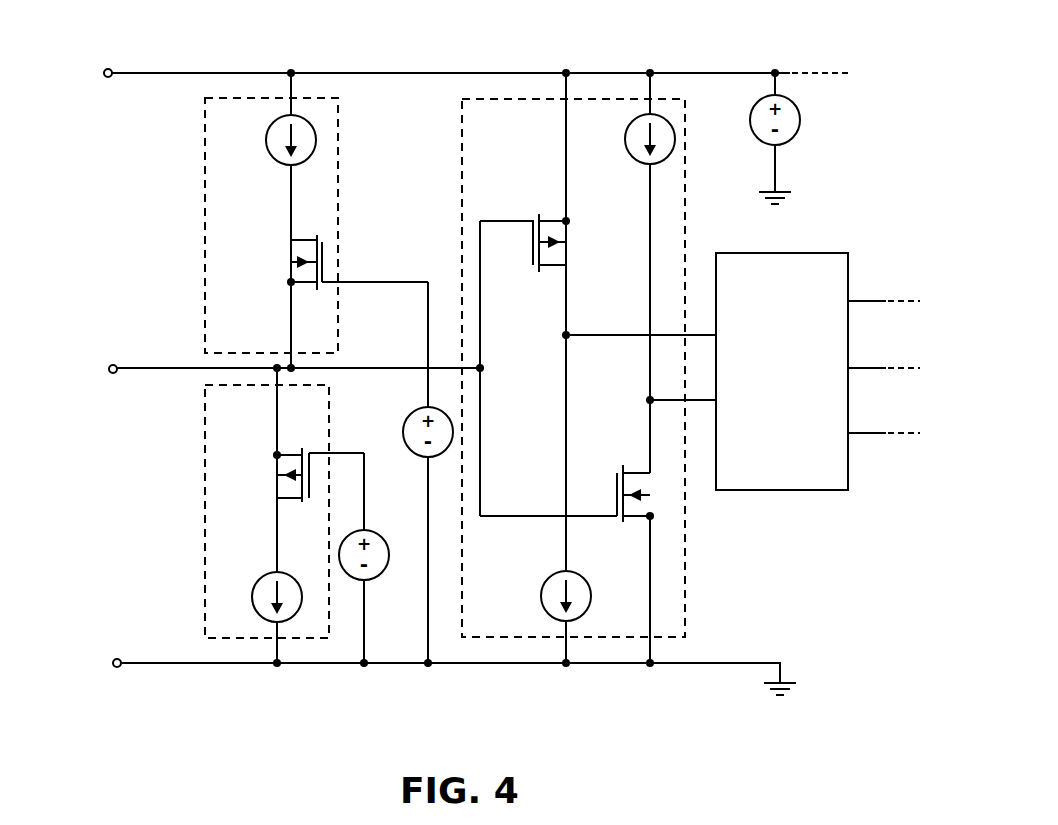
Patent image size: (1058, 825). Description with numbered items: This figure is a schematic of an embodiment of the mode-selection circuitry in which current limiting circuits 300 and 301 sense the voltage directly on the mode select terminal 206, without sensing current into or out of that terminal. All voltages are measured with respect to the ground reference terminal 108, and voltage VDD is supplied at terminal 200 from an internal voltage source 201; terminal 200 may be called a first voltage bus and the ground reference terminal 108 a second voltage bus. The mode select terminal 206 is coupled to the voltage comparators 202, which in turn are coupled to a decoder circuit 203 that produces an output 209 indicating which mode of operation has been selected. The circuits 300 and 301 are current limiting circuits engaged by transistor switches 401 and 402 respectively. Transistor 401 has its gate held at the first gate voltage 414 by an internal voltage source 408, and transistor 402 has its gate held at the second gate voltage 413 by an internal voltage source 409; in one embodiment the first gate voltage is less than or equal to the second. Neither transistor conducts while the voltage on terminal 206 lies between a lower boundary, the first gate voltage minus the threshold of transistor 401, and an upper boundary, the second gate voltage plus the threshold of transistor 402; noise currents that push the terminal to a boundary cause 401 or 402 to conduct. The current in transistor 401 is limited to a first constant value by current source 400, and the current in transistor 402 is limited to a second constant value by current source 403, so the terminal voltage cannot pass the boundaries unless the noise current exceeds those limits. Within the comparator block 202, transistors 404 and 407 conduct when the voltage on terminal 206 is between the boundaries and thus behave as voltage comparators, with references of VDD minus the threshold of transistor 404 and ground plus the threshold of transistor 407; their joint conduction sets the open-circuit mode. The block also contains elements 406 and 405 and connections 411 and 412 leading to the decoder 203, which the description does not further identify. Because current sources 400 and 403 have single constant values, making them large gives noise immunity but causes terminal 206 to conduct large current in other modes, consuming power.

The VDD terminal 200 is at (108, 64).
The mode select terminal 206 is at (106, 354).
The ground reference terminal 108 is at (105, 652).
The current limiting circuit 300 is at (205, 198).
The current source 400 is at (272, 166).
The transistor switch 401 is at (282, 262).
The gate voltage VG1 414 is at (392, 290).
The internal voltage source 408 is at (410, 420).
The current limiting circuit 301 is at (205, 522).
The transistor switch 402 is at (272, 466).
The gate voltage VG2 413 is at (367, 458).
The internal voltage source 409 is at (392, 572).
The current source 403 is at (262, 586).
The voltage comparators 202 is at (462, 156).
The current source 406 is at (612, 156).
The transistor 404 is at (520, 258).
The first output node 411 is at (580, 320).
The second output node 412 is at (642, 394).
The transistor 407 is at (610, 482).
The current source 405 is at (539, 590).
The internal voltage source 201 is at (804, 118).
The decoder circuit 203 is at (790, 252).
The output 209 is at (888, 462).